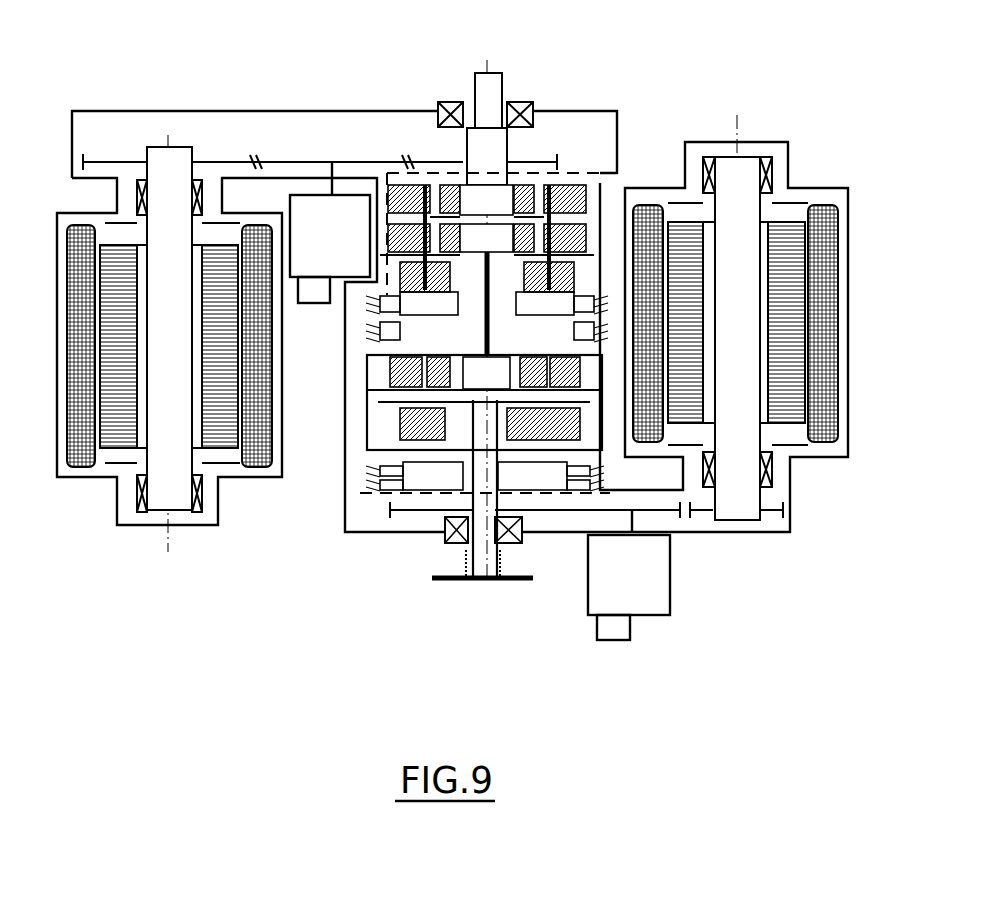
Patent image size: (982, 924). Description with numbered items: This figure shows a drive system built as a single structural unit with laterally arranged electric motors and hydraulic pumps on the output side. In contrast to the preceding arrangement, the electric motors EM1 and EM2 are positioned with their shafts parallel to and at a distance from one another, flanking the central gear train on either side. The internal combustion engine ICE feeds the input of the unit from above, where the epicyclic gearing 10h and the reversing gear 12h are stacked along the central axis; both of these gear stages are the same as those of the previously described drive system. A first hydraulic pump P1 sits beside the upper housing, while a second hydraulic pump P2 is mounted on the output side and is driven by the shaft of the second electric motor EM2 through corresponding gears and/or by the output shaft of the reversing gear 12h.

The hydraulic pump P1 is at (350, 235).
The second hydraulic pump P2 is at (640, 589).
The electric motor EM1 is at (107, 457).
The second electric motor EM2 is at (800, 443).
The internal combustion engine ICE is at (485, 115).
The epicyclic gearing 10h is at (602, 237).
The reversing gear 12h is at (598, 483).